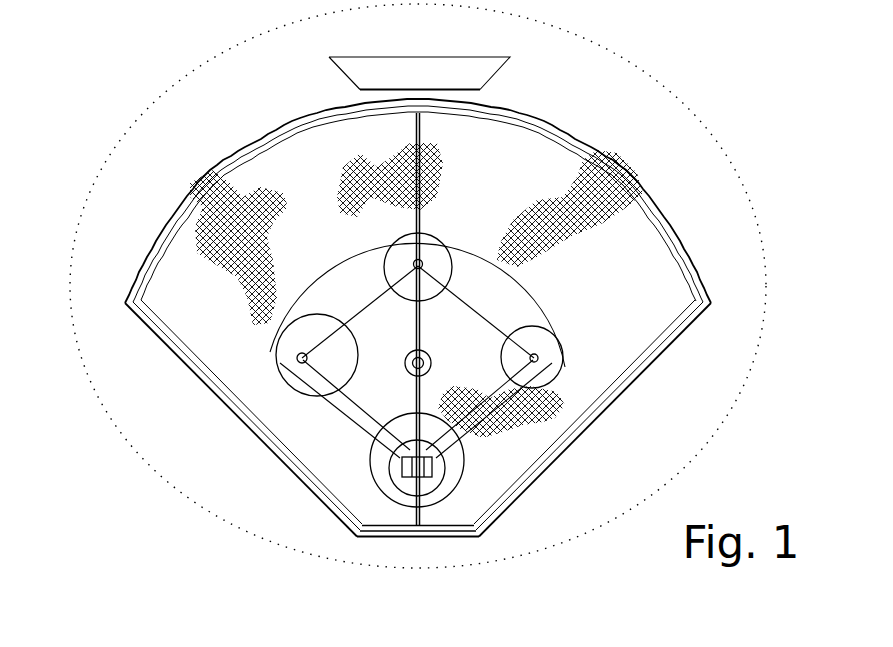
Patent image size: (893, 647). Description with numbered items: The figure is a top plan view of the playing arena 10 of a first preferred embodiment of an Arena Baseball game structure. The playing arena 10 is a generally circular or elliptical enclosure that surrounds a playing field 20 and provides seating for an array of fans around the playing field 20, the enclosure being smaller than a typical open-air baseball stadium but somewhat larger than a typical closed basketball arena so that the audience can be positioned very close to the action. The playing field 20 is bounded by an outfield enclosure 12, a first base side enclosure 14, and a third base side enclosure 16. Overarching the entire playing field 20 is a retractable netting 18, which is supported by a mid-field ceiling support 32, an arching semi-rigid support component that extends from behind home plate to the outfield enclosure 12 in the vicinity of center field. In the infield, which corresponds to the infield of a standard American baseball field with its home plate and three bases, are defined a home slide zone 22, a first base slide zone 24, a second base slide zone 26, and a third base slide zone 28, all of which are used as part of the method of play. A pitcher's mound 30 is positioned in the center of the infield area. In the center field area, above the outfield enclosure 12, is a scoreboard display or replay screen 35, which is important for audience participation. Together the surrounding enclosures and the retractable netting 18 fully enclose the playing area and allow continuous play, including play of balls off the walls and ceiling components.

The playing arena 10 is at (134, 77).
The outfield enclosure 12 is at (547, 128).
The first base side enclosure 14 is at (645, 360).
The third base side enclosure 16 is at (172, 343).
The retractable netting 18 is at (600, 190).
The playing field 20 is at (313, 243).
The home slide zone 22 is at (467, 472).
The first base slide zone 24 is at (563, 355).
The second base slide zone 26 is at (440, 242).
The third base slide zone 28 is at (272, 368).
The pitcher's mound 30 is at (402, 375).
The mid-field ceiling support 32 is at (413, 128).
The scoreboard display (replay screen) 35 is at (368, 56).